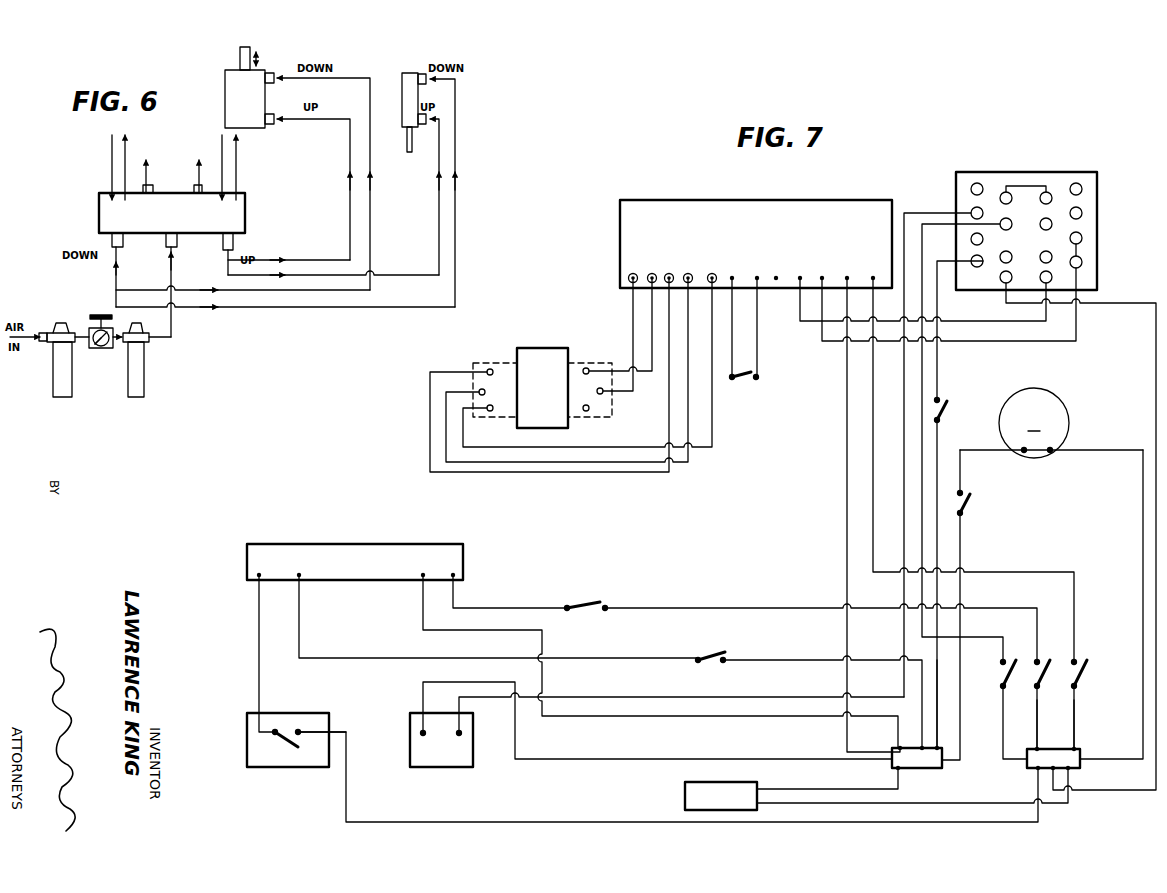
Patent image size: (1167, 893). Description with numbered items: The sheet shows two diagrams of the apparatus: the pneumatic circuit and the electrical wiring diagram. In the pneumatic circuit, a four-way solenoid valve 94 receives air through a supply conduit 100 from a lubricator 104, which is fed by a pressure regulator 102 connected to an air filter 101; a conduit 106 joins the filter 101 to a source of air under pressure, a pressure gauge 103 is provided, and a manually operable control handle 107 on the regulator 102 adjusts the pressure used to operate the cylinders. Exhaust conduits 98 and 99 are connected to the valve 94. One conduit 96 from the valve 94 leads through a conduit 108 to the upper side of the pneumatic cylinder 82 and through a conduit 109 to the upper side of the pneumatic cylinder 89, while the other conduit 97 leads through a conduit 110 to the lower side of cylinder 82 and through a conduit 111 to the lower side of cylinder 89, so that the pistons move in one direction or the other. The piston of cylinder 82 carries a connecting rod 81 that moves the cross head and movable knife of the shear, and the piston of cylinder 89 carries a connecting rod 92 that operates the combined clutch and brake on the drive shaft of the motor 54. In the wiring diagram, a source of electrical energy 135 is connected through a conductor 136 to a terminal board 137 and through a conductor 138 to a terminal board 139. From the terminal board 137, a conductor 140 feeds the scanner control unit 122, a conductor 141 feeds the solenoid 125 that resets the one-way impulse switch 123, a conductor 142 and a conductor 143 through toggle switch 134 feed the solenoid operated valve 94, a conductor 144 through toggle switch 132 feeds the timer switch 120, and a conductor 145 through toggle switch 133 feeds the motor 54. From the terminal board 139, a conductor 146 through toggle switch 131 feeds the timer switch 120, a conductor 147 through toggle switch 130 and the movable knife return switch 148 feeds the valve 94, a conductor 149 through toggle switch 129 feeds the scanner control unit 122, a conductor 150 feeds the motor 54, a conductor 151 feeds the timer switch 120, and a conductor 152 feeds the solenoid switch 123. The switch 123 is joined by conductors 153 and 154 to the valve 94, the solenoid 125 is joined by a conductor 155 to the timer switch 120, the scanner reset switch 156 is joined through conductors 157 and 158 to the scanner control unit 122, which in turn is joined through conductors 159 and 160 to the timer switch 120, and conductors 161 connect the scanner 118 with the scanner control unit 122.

In FIG. 7, the motor 54 is at (1062, 418).
In FIG. 6, the connecting rod 81 is at (240, 57).
In FIG. 6, the pneumatic cylinder 82 is at (225, 97).
In FIG. 6, the pneumatic cylinder 89 is at (402, 92).
In FIG. 6, the connecting rod 92 is at (407, 141).
In FIG. 6, the four-way solenoid valve 94 is at (182, 220).
In FIG. 7, the four-way solenoid valve 94 is at (364, 567).
In FIG. 6, the conduit 96 is at (118, 241).
In FIG. 6, the conduit 97 is at (235, 247).
In FIG. 6, the exhaust conduit 98 is at (150, 187).
In FIG. 6, the exhaust conduit 99 is at (196, 186).
In FIG. 6, the supply conduit 100 is at (172, 241).
In FIG. 6, the air filter 101 is at (53, 383).
In FIG. 6, the pressure regulator 102 is at (106, 350).
In FIG. 6, the pressure gauge 103 is at (95, 344).
In FIG. 6, the lubricator 104 is at (144, 383).
In FIG. 6, the conduit 106 is at (42, 333).
In FIG. 6, the control handle 107 is at (100, 318).
In FIG. 6, the conduit 108 is at (198, 300).
In FIG. 6, the conduit 109 is at (255, 313).
In FIG. 6, the conduit 110 is at (321, 259).
In FIG. 6, the conduit 111 is at (405, 274).
In FIG. 7, the scanner 118 is at (554, 397).
In FIG. 7, the timer switch 120 is at (1036, 246).
In FIG. 7, the scanner control unit housing 122 is at (768, 242).
In FIG. 7, the switch 123 is at (286, 760).
In FIG. 7, the solenoid 125 is at (443, 752).
In FIG. 7, the toggle switch 129 is at (1084, 678).
In FIG. 7, the toggle switch 130 is at (1042, 678).
In FIG. 7, the toggle switch 131 is at (1007, 678).
In FIG. 7, the toggle switch 132 is at (942, 409).
In FIG. 7, the toggle switch 133 is at (966, 508).
In FIG. 7, the toggle switch 134 is at (720, 656).
In FIG. 7, the source of electrical energy 135 is at (685, 795).
In FIG. 7, the conductor 136 is at (836, 790).
In FIG. 7, the terminal board 137 is at (926, 758).
In FIG. 7, the conductor 138 is at (972, 805).
In FIG. 7, the terminal board 139 is at (1032, 758).
In FIG. 7, the conductor 140 is at (847, 536).
In FIG. 7, the conductor 141 is at (762, 759).
In FIG. 7, the conductor 142 is at (722, 718).
In FIG. 7, the conductor 143 is at (788, 660).
In FIG. 7, the conductor 144 is at (937, 689).
In FIG. 7, the conductor 145 is at (964, 547).
In FIG. 7, the conductor 146 is at (998, 737).
In FIG. 7, the conductor 147 is at (1036, 737).
In FIG. 7, the movable knife return switch 148 is at (581, 604).
In FIG. 7, the conductor 149 is at (1074, 737).
In FIG. 7, the conductor 150 is at (1143, 537).
In FIG. 7, the conductor 151 is at (1156, 420).
In FIG. 7, the conductor 152 is at (555, 822).
In FIG. 7, the conductor 153 is at (259, 683).
In FIG. 7, the conductor 154 is at (299, 628).
In FIG. 7, the conductor 155 is at (722, 697).
In FIG. 7, the scanner reset switch 156 is at (745, 377).
In FIG. 7, the conductor 157 is at (731, 366).
In FIG. 7, the conductor 158 is at (758, 347).
In FIG. 7, the conductor 159 is at (977, 321).
In FIG. 7, the conductor 160 is at (982, 341).
In FIG. 7, the conductors 161 is at (584, 472).